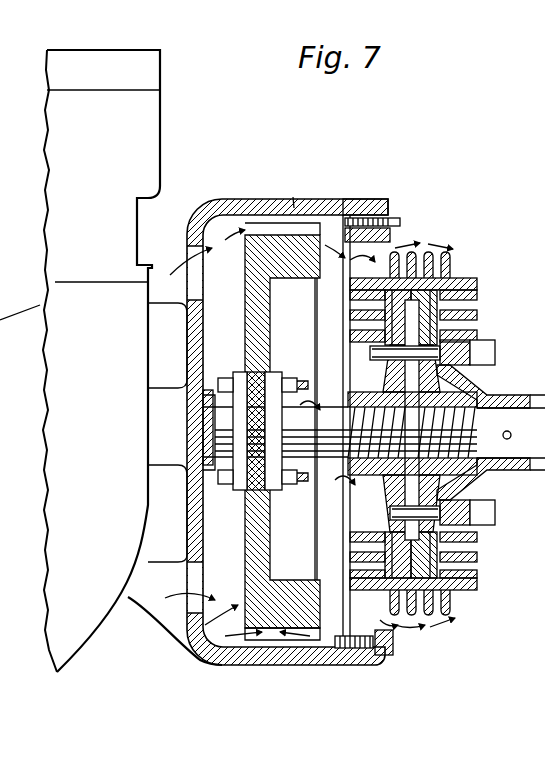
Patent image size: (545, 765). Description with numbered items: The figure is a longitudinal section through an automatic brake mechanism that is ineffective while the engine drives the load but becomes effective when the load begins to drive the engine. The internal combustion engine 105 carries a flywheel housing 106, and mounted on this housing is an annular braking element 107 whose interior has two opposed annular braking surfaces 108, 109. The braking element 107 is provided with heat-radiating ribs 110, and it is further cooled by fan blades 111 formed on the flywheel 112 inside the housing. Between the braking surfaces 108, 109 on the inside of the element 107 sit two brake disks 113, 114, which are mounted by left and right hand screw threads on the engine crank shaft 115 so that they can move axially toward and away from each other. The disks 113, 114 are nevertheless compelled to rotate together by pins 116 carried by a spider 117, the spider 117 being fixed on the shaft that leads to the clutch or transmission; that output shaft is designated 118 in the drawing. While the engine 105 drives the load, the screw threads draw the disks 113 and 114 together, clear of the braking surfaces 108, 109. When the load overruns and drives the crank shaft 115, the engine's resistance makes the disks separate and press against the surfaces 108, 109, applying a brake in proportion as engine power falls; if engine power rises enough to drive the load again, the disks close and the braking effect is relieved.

The internal combustion engine 105 is at (111, 361).
The flywheel housing 106 is at (268, 420).
The annular braking element 107 is at (455, 288).
The annular braking surface 108 is at (360, 305).
The annular braking surface 109 is at (455, 320).
The heat-radiating ribs 110 is at (437, 262).
The fan blades 111 is at (297, 233).
The flywheel 112 is at (282, 431).
The brake disk 113 is at (405, 340).
The brake disk 114 is at (430, 383).
The engine crank shaft 115 is at (335, 467).
The pins 116 is at (482, 352).
The spider 117 is at (487, 487).
The shaft 118 is at (374, 432).